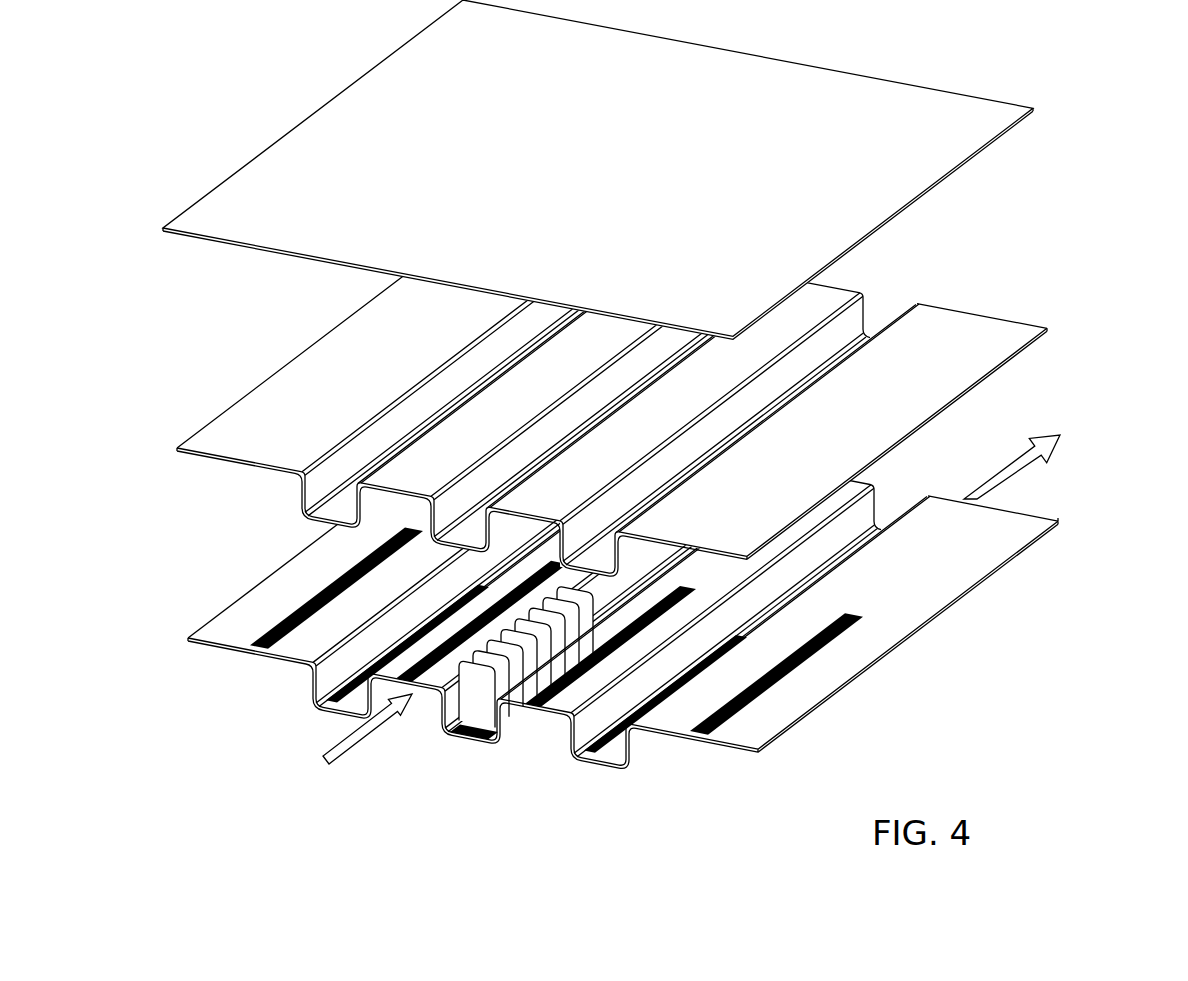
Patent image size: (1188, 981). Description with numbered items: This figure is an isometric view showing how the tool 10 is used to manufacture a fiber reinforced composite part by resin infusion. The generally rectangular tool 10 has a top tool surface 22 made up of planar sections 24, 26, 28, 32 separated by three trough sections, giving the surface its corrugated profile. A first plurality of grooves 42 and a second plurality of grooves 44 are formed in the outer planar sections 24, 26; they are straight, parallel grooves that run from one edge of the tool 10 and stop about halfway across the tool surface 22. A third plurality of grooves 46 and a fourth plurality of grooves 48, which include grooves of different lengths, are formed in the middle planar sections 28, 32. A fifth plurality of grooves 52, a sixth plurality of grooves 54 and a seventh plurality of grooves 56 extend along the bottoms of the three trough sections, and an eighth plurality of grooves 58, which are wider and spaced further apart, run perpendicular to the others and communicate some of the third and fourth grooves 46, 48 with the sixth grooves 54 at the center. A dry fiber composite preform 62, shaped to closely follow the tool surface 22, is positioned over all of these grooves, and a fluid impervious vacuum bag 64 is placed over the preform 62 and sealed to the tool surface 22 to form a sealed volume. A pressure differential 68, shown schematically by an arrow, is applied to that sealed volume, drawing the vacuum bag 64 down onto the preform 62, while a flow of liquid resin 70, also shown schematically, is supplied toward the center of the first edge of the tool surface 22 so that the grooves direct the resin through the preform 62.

The tool 10 is at (1082, 518).
The tool surface 22 is at (996, 533).
The first planar section 24 is at (254, 603).
The second planar section 26 is at (913, 610).
The third planar section 28 is at (402, 665).
The fourth planar section 32 is at (534, 717).
The first plurality of grooves 42 is at (233, 659).
The second plurality of grooves 44 is at (691, 741).
The third plurality of grooves 46 is at (423, 685).
The fourth plurality of grooves 48 is at (466, 747).
The fifth plurality of grooves 52 is at (329, 719).
The sixth plurality of grooves 54 is at (450, 703).
The seventh plurality of grooves 56 is at (591, 769).
The eighth plurality of grooves 58 is at (438, 693).
The dry fiber composite preform 62 is at (1040, 318).
The vacuum bag 64 is at (935, 80).
The pressure differential 68 is at (1043, 442).
The flow of liquid resin 70 is at (328, 760).